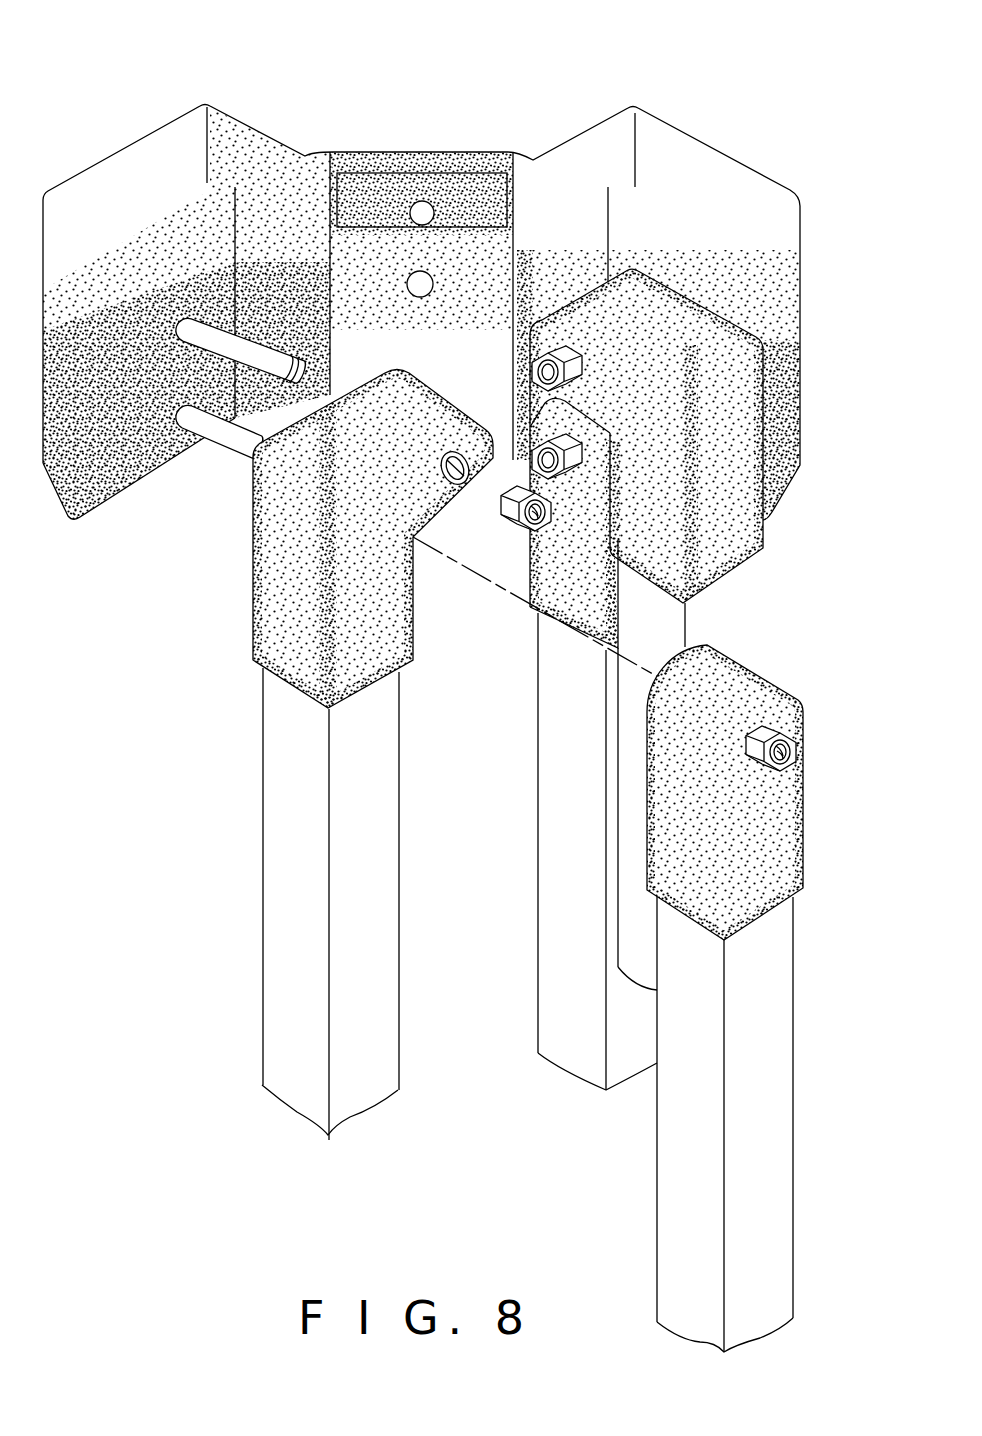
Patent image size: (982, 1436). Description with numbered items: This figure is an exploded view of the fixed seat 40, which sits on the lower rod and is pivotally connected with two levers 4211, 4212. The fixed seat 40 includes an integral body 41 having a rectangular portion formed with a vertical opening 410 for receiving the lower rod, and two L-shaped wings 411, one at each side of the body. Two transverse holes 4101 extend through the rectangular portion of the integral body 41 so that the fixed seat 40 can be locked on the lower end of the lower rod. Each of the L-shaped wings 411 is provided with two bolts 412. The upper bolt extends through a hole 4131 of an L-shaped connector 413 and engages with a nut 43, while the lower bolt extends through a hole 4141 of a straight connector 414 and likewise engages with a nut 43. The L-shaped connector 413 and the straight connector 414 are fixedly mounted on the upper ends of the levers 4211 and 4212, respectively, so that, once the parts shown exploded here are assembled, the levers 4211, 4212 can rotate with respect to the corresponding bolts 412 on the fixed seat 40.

The fixed seat 40 is at (538, 88).
The integral body 41 is at (743, 147).
The vertical opening 410 is at (421, 250).
The transverse holes 4101 is at (432, 287).
The L-shaped wings 411 is at (615, 110).
The bolts 412 is at (223, 452).
The L-shaped connector 413 is at (502, 490).
The hole 4131 is at (458, 485).
The straight connector 414 is at (768, 782).
The hole 4141 is at (795, 760).
The lever 4211 is at (263, 737).
The lever 4212 is at (793, 1050).
The nut 43 is at (780, 780).